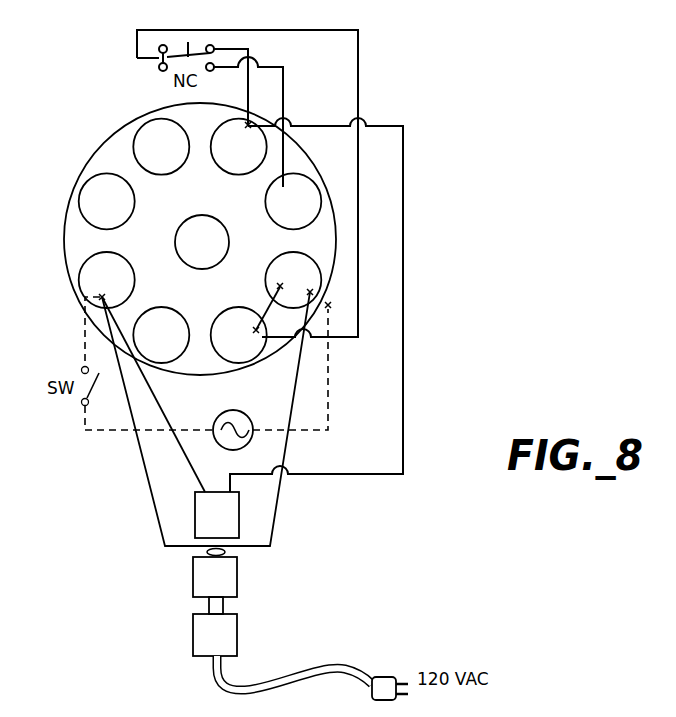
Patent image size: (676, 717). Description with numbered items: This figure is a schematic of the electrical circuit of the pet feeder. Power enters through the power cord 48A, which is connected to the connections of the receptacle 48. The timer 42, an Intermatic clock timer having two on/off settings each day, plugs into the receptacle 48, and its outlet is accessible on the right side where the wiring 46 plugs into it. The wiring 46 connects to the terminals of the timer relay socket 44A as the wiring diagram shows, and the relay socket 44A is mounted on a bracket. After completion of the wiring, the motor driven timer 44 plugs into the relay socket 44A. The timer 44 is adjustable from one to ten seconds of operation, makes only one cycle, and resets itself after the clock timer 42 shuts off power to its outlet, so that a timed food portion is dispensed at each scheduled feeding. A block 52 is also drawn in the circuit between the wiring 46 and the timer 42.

The relay socket 44A is at (100, 145).
The timer 44 is at (202, 242).
The wiring 46 is at (275, 518).
The connector block 52 is at (195, 521).
The timer 42 is at (237, 578).
The receptacle 48 is at (237, 640).
The power cord 48A is at (323, 670).